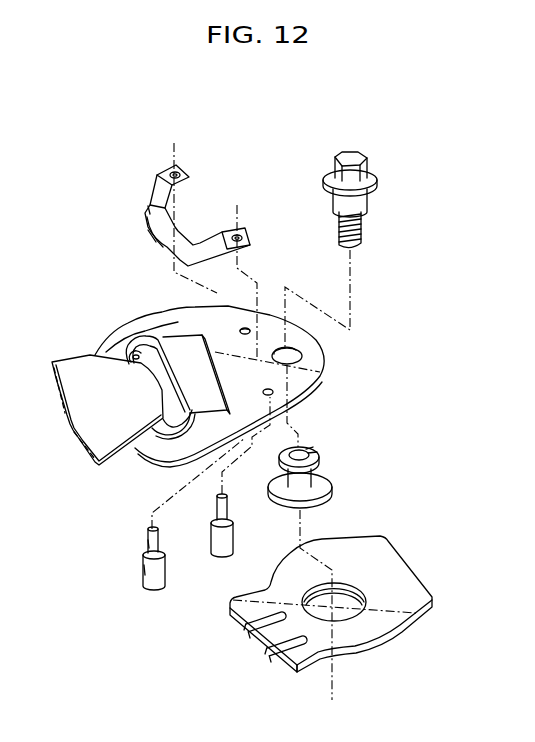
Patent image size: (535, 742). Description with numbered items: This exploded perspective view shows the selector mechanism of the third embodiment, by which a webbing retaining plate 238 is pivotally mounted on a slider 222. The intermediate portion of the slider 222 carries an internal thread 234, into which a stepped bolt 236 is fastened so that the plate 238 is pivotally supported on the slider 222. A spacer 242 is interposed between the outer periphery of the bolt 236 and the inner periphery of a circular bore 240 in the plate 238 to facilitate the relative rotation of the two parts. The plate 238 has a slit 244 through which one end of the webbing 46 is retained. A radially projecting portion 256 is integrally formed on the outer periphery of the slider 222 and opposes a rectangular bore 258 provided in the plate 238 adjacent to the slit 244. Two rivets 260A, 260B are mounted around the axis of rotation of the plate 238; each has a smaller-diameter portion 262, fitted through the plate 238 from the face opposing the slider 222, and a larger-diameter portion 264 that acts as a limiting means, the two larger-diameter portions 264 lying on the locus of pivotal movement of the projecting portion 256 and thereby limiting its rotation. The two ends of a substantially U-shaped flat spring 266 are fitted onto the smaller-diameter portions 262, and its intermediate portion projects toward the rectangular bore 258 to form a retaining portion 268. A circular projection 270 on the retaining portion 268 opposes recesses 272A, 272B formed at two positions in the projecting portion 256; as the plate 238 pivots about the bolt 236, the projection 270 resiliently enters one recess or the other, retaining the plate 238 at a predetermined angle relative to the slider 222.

The webbing 46 is at (70, 360).
The slider 222 is at (371, 654).
The internal thread 234 is at (348, 597).
The stepped bolt 236 is at (332, 165).
The webbing retaining plate 238 is at (326, 368).
The circular bore 240 is at (278, 345).
The spacer 242 is at (321, 459).
The slit 244 is at (133, 356).
The radially projecting portion 256 is at (280, 664).
The rectangular bore 258 is at (182, 338).
The rivet 260A is at (216, 558).
The rivet 260B is at (145, 590).
The smaller-diameter portion 262 is at (147, 545).
The larger-diameter portion 264 is at (144, 566).
The flat spring 266 is at (187, 164).
The retaining portion 268 is at (144, 214).
The projection 270 is at (150, 243).
The recess 272A is at (245, 631).
The recess 272B is at (268, 657).